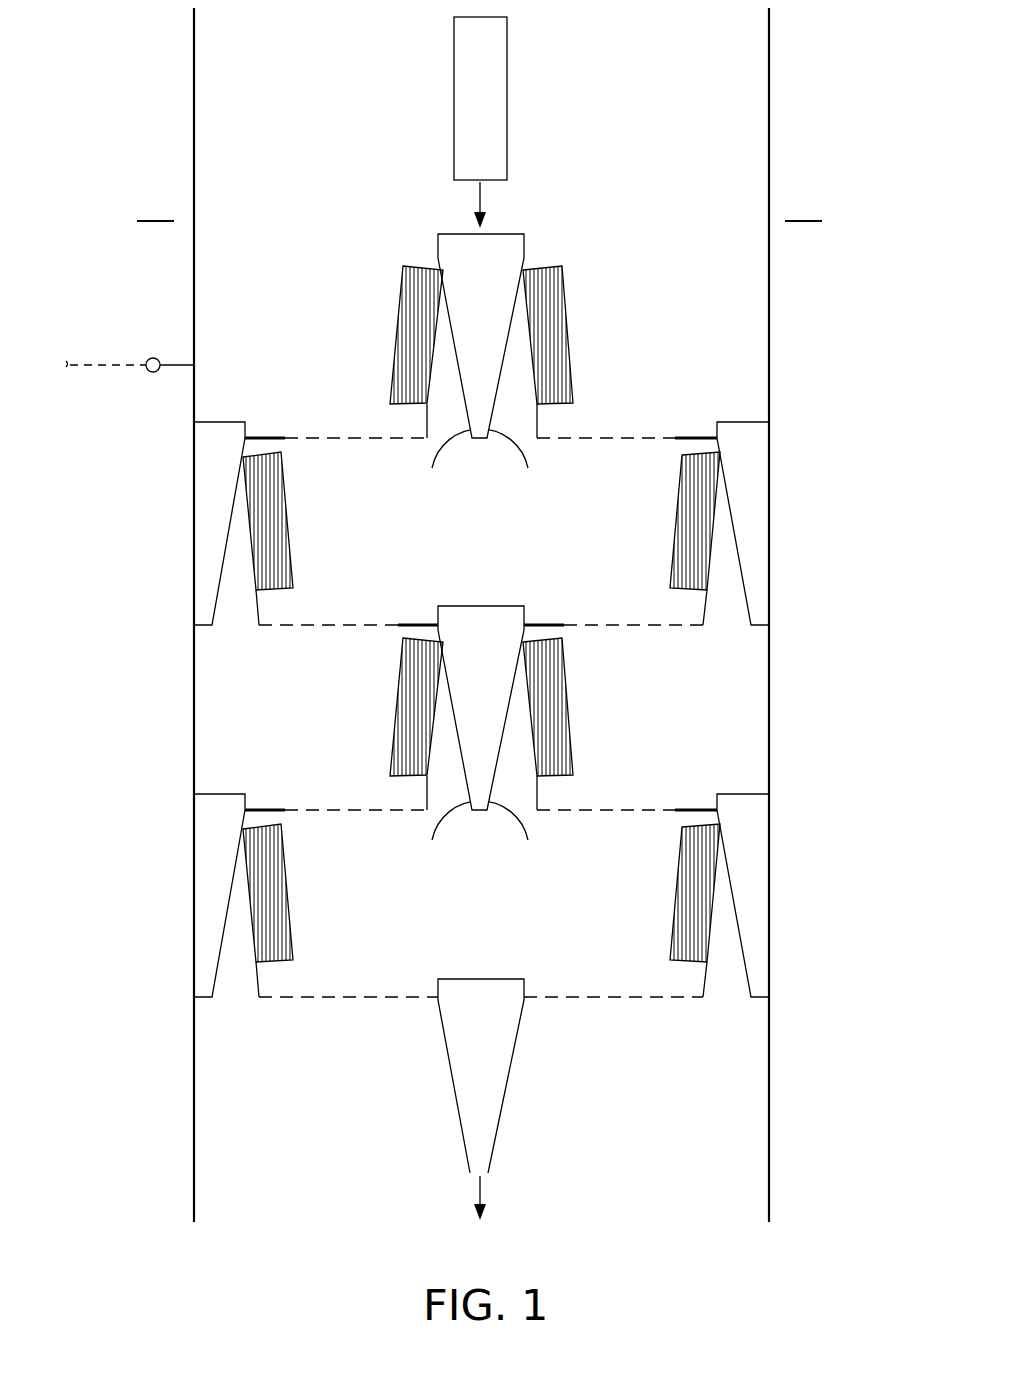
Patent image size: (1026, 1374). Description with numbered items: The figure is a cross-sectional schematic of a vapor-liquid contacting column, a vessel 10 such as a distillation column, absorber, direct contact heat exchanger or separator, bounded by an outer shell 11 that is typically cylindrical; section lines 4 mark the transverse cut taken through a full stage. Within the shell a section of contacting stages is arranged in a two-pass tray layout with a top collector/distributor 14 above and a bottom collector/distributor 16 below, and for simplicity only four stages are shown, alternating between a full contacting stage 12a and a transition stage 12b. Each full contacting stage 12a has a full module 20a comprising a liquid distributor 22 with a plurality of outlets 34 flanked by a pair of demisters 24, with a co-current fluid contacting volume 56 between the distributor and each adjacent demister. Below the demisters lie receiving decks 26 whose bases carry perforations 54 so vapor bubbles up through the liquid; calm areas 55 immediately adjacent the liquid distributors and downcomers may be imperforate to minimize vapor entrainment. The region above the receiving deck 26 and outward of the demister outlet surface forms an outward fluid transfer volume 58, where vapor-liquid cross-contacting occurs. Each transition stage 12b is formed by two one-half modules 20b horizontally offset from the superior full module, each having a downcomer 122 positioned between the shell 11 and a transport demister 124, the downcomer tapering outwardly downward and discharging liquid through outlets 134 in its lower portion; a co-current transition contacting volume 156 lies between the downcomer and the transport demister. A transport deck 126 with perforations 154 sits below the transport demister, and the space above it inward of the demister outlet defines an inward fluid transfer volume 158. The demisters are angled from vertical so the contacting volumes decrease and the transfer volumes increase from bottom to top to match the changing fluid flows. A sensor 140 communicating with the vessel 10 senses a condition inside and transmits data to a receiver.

The section line 4- 4 is at (156, 206).
The vessel 10 is at (175, 244).
The outer shell 11 is at (195, 312).
The full contacting stage 12a is at (758, 308).
The transition stage 12b is at (778, 525).
The top collector/distributor 14 is at (454, 60).
The bottom collector/distributor 16 is at (449, 1057).
The full module 20a is at (560, 242).
The one-half module 20b is at (169, 453).
The liquid distributor 22 is at (460, 233).
The demister 24 is at (396, 362).
The receiving deck 26 is at (375, 436).
The outlets 34 is at (481, 646).
The perforations 54 is at (336, 442).
The calm areas 55 is at (262, 436).
The co-current fluid contacting volume 56 is at (462, 419).
The outward fluid transfer volume 58 is at (348, 304).
The downcomer 122 is at (218, 420).
The transport demister 124 is at (278, 510).
The transport deck 126 is at (390, 620).
The outlets 134 is at (213, 628).
The sensor 140 is at (179, 368).
The perforations 154 is at (326, 627).
The co-current transition contacting volume 156 is at (238, 600).
The inward fluid transfer volume 158 is at (352, 539).